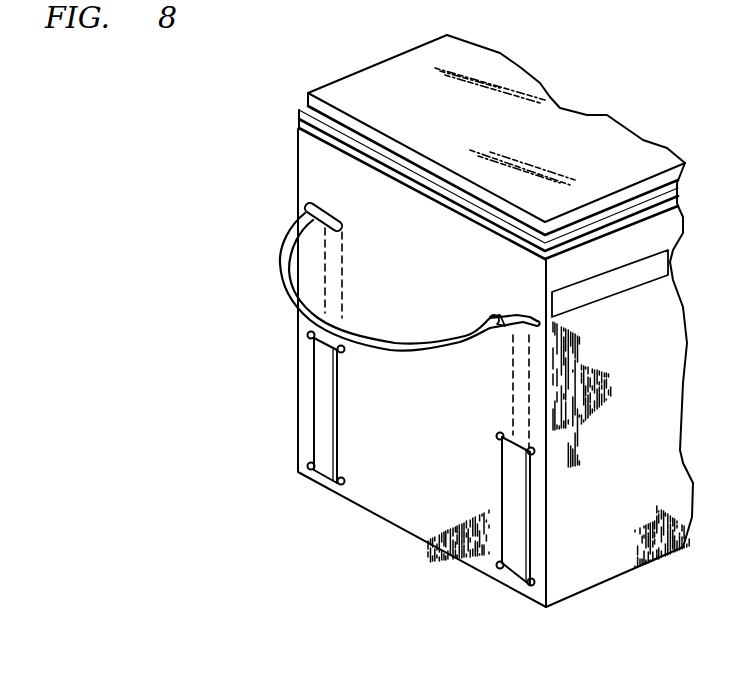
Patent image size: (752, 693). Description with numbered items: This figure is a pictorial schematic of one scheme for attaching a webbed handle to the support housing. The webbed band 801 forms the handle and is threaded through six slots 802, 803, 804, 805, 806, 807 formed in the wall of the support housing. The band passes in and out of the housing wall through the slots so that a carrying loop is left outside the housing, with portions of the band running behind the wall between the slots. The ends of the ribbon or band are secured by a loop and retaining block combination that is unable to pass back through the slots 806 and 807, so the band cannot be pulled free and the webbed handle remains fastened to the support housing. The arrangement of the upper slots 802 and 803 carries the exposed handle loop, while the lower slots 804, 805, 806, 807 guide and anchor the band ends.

The webbed band 801 is at (390, 350).
The slot 802 is at (333, 222).
The slot 803 is at (497, 316).
The slot 804 is at (312, 338).
The slot 805 is at (500, 440).
The slot 806 is at (343, 481).
The slot 807 is at (500, 569).